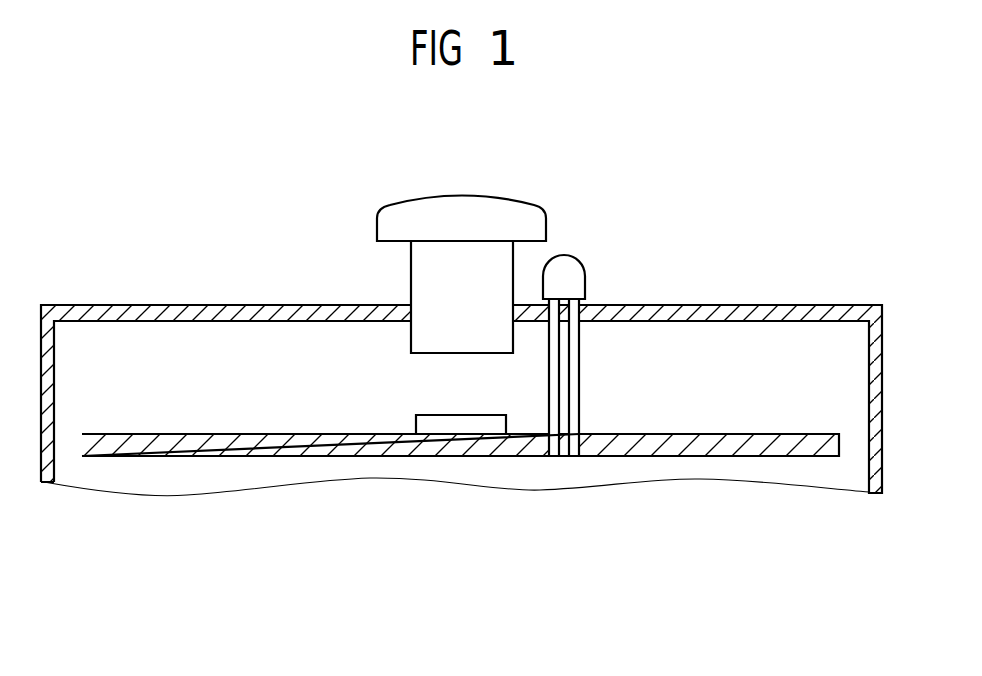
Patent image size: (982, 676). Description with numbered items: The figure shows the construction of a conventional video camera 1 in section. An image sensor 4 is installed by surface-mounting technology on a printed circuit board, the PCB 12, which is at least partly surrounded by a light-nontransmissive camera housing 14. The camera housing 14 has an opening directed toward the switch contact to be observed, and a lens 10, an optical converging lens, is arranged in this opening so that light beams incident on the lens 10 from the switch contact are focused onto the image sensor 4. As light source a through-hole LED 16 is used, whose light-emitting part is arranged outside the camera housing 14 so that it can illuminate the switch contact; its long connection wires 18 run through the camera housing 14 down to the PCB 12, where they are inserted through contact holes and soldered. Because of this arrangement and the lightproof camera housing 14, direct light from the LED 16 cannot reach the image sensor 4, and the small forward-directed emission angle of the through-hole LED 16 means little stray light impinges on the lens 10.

The video camera 1 is at (172, 187).
The image sensor 4 is at (461, 430).
The lens 10 is at (461, 203).
The printed circuit board 12 is at (770, 445).
The camera housing 14 is at (820, 312).
The through-hole LED 16 is at (567, 262).
The connection wires 18 is at (572, 377).